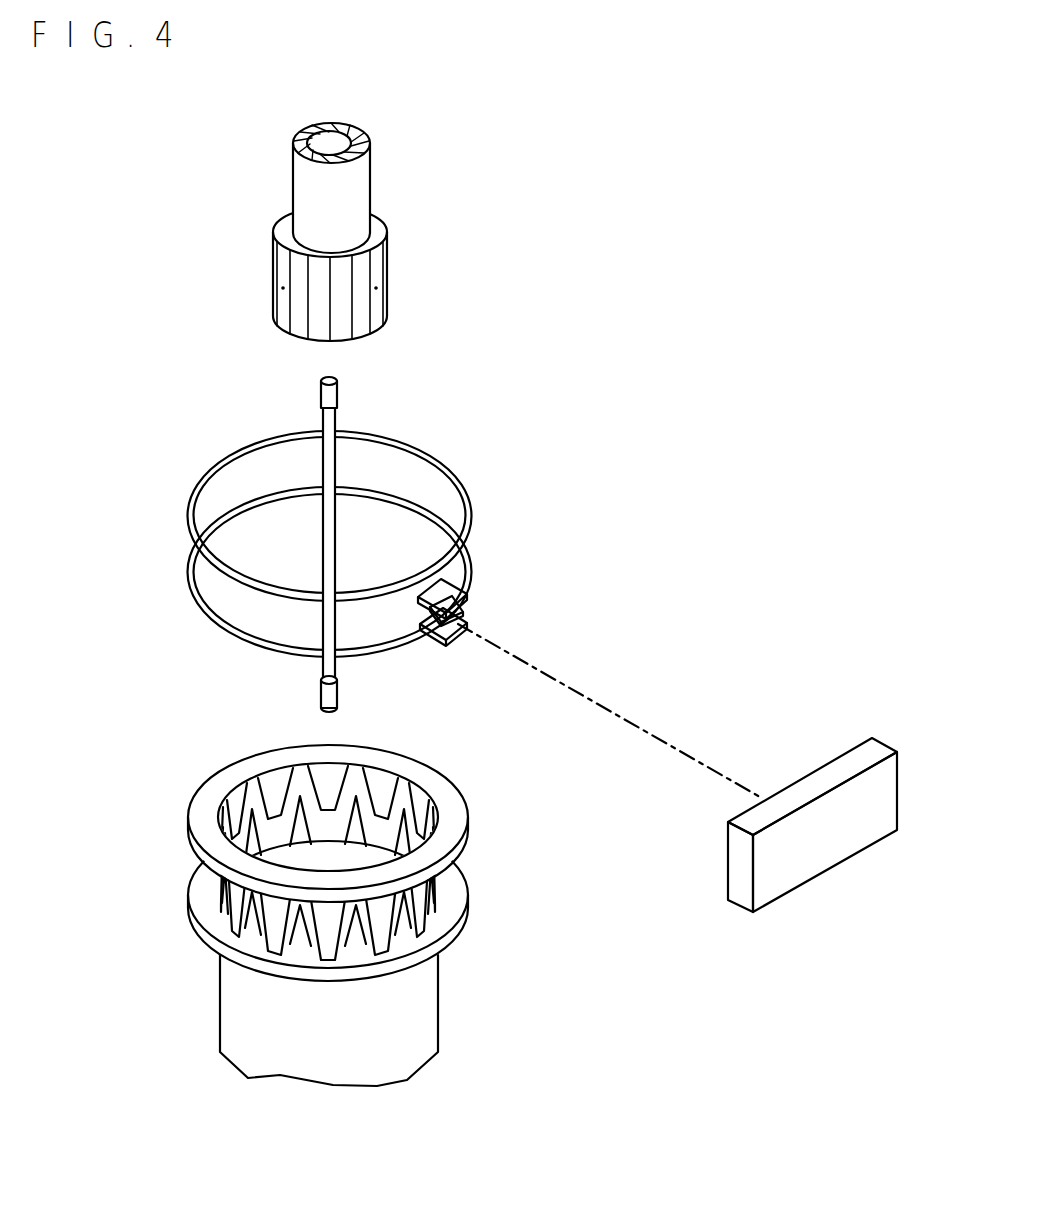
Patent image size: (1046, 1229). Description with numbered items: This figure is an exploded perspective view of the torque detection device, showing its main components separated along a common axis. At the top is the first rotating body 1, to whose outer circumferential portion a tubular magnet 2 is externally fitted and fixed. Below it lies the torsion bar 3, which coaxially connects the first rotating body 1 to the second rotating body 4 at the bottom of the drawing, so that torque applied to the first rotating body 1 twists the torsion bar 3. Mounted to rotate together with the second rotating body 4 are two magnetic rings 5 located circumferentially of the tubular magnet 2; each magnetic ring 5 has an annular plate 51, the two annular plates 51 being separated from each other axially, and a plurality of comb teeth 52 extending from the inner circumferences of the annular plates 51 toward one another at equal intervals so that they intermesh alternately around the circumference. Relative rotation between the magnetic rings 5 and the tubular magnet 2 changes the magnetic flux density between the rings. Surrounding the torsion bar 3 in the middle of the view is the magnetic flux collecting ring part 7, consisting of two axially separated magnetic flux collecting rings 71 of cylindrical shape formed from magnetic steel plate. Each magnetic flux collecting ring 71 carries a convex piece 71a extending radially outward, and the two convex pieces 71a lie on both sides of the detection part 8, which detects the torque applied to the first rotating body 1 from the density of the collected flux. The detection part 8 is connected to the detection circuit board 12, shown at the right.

The first rotating body 1 is at (360, 186).
The tubular magnet 2 is at (388, 268).
The torsion bar 3 is at (338, 418).
The second rotating body 4 is at (423, 1018).
The magnetic ring 5 is at (346, 884).
The magnetic flux collecting ring part 7 is at (355, 552).
The detection part 8 is at (462, 612).
The detection circuit board 12 is at (823, 763).
The annular plate 51 is at (462, 817).
The comb teeth 52 is at (477, 970).
The magnetic flux collecting ring 71 is at (470, 486).
The convex piece 71a is at (445, 594).